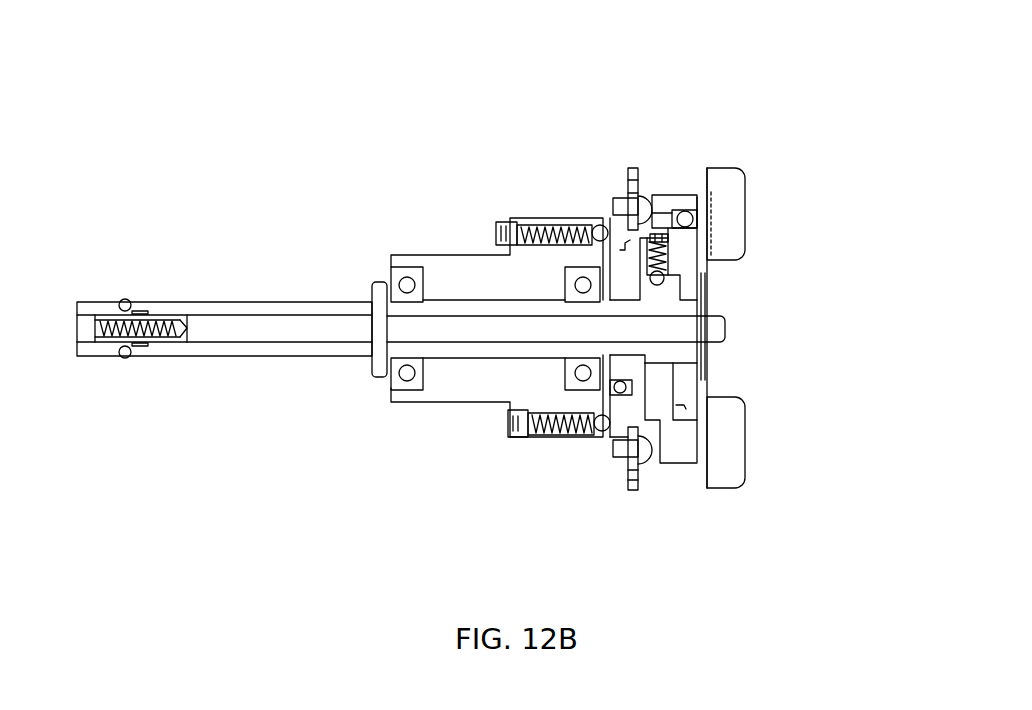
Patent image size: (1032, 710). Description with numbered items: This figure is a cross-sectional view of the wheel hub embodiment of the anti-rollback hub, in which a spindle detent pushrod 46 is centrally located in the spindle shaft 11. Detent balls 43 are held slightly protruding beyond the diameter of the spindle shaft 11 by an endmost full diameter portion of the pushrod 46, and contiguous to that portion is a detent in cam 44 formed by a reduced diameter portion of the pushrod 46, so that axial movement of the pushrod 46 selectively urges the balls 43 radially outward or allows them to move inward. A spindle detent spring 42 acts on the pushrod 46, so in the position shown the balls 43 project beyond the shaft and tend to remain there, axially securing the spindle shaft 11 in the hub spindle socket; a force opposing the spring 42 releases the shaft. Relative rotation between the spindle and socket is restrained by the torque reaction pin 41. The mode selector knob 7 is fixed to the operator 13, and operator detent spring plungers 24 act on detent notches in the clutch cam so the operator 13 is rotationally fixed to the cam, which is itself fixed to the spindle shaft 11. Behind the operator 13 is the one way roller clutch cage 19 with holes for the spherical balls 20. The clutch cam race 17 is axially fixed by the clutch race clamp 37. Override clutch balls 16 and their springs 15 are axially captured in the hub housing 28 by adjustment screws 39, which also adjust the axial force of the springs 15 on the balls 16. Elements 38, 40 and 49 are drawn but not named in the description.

The mode selector knob 7 is at (769, 442).
The spindle shaft 11 is at (224, 361).
The operator 13 is at (709, 440).
The springs 15 is at (537, 178).
The override clutch balls 16 is at (549, 155).
The clutch cam race 17 is at (577, 132).
The one way roller clutch cage 19 is at (699, 326).
The spherical balls 20 is at (570, 463).
The operator detent spring plungers 24 is at (714, 172).
The hub housing 28 is at (464, 404).
The clutch race clamp 37 is at (693, 245).
The block 38 is at (712, 136).
The adjustment screws 39 is at (477, 196).
The bearing 40 is at (474, 342).
The torque reaction pin 41 is at (337, 375).
The spindle detent spring 42 is at (172, 281).
The detent balls 43 is at (164, 387).
The detent in cam 44 is at (179, 240).
The spindle detent pushrod 46 is at (610, 281).
The knob 49 is at (770, 195).